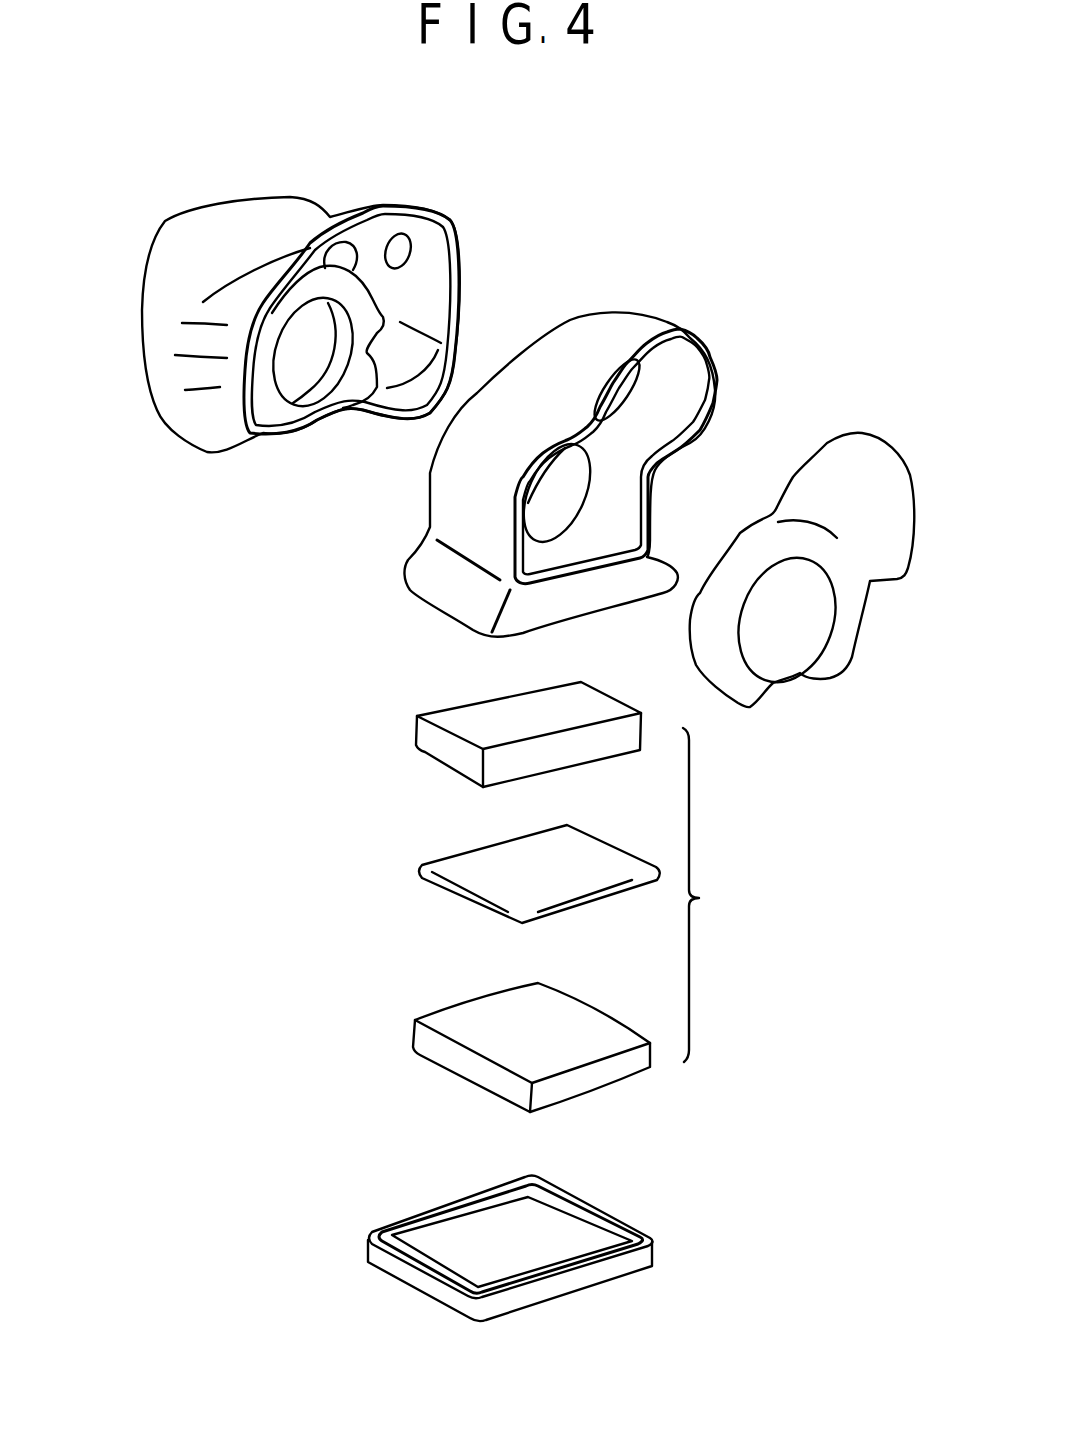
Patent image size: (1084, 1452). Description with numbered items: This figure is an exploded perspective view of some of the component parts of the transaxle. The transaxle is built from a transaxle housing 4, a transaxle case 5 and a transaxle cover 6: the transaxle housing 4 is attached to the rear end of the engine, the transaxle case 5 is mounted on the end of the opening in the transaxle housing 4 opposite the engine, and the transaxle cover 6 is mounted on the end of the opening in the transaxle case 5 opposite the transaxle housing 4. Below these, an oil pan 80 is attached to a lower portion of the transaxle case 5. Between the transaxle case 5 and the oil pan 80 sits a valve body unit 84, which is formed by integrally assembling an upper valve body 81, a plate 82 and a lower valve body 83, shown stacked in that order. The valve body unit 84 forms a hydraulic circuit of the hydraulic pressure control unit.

The transaxle housing 4 is at (265, 194).
The transaxle case 5 is at (593, 312).
The transaxle cover 6 is at (833, 441).
The oil pan 80 is at (368, 1228).
The upper valve body 81 is at (417, 717).
The plate 82 is at (420, 863).
The lower valve body 83 is at (415, 1018).
The valve body unit 84 is at (712, 895).